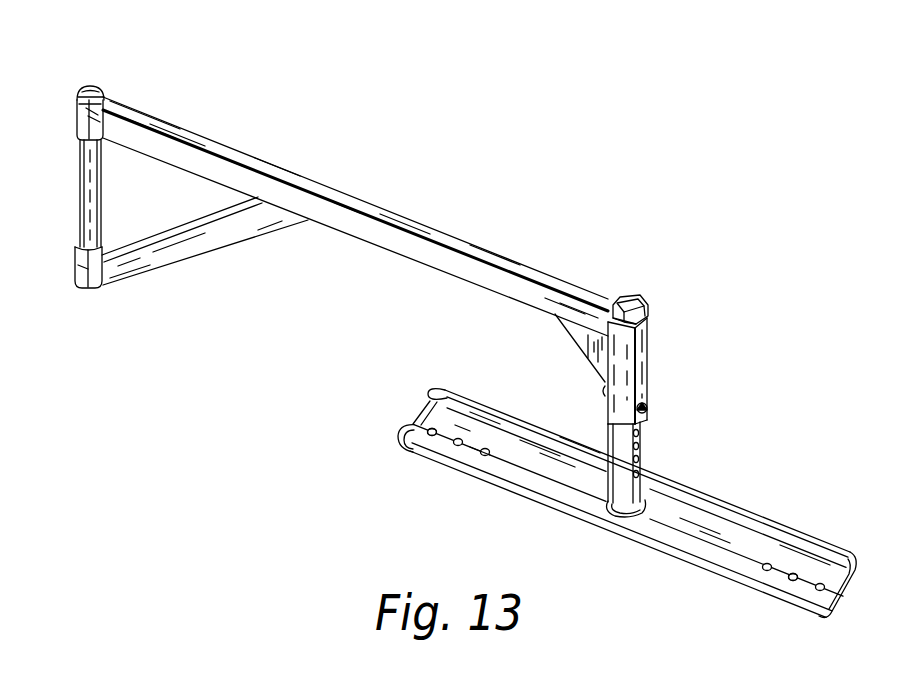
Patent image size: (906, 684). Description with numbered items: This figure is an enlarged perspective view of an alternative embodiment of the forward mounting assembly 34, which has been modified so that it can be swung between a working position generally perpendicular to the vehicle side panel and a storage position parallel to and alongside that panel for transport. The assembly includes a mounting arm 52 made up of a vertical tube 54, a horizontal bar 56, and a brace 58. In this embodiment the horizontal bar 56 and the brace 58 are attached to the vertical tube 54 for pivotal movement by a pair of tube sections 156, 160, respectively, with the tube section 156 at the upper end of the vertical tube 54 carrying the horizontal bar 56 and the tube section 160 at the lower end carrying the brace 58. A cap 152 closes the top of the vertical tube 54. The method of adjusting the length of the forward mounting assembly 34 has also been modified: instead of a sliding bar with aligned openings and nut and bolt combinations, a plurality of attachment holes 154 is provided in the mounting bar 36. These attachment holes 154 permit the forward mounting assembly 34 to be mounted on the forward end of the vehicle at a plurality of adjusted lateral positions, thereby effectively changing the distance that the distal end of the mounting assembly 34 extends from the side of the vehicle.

The forward mounting assembly 34 is at (326, 338).
The mounting bar 36 is at (525, 486).
The mounting arm 52 is at (399, 208).
The vertical tube 54 is at (102, 192).
The horizontal bar 56 is at (280, 170).
The brace 58 is at (216, 232).
The end cap 152 is at (94, 91).
The attachment holes 154 is at (436, 430).
The tube section 156 is at (83, 115).
The tube section 160 is at (78, 277).